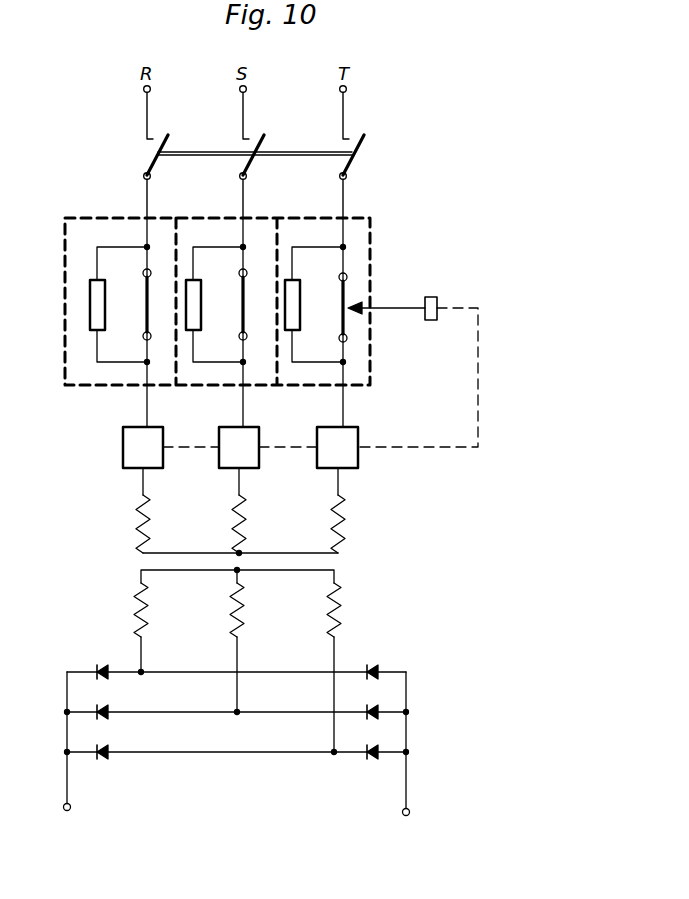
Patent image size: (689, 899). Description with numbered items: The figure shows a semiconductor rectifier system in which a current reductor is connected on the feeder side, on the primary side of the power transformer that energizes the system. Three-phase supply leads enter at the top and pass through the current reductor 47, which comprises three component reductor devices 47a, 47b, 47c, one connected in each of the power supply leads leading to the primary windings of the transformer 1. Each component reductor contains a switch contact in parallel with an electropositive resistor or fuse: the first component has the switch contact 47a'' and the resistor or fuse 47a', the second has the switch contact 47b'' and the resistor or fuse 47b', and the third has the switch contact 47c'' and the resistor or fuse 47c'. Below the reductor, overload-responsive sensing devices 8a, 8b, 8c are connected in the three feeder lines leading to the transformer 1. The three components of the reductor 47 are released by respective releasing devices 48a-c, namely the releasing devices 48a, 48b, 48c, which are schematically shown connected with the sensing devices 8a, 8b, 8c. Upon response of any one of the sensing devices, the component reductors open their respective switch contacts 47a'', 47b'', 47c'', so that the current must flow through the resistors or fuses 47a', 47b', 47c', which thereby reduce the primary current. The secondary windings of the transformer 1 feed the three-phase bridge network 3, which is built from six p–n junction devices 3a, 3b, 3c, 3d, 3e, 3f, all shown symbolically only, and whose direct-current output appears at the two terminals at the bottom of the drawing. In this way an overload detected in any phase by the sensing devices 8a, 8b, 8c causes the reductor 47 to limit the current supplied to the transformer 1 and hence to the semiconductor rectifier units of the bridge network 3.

The current reductor 47 is at (43, 313).
The component reductor device 47a is at (136, 312).
The component reductor device 47b is at (230, 312).
The component reductor device 47c is at (333, 312).
The electropositive resistor or fuse 47a' is at (114, 305).
The switch contact 47a'' is at (164, 304).
The electropositive resistor or fuse 47b' is at (211, 305).
The switch contact 47b'' is at (260, 304).
The electropositive resistor or fuse 47c' is at (309, 305).
The switch contact 47c'' is at (360, 307).
The releasing devices 48a-c is at (413, 372).
The releasing device 48a is at (413, 372).
The releasing device 48b is at (413, 372).
The releasing device 48c is at (413, 372).
The overload-responsive sensing device 8a is at (143, 461).
The overload-responsive sensing device 8b is at (239, 461).
The overload-responsive sensing device 8c is at (337, 461).
The transformer 1 is at (380, 578).
The bridge network 3 is at (46, 728).
The p–n junction device 3a is at (106, 664).
The p–n junction device 3b is at (106, 704).
The p–n junction device 3c is at (106, 744).
The p–n junction device 3d is at (378, 664).
The p–n junction device 3e is at (377, 704).
The p–n junction device 3f is at (377, 744).